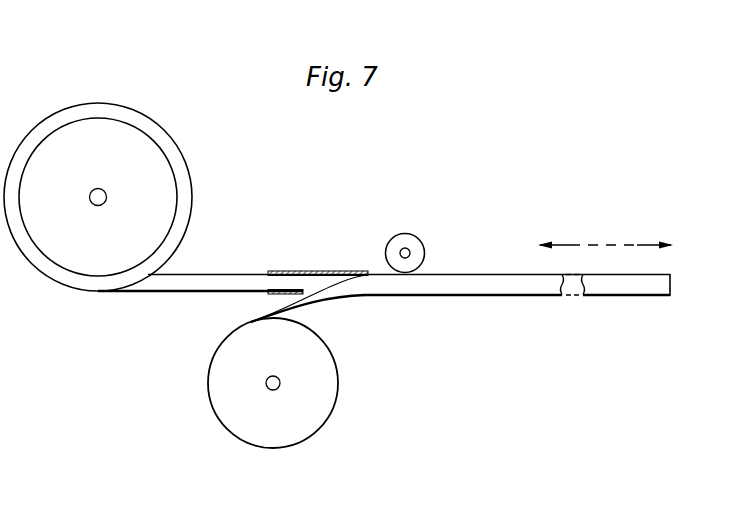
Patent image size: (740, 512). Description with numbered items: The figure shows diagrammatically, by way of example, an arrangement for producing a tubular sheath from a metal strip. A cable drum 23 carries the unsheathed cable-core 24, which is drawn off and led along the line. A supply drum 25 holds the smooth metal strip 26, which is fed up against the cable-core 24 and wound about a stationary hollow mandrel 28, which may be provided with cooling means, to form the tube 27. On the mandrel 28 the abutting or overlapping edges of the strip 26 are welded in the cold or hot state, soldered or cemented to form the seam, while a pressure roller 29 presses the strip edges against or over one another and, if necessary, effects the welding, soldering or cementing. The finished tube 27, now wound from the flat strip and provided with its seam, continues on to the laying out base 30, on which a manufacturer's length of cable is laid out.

The cable drum 23 is at (118, 143).
The unsheathed cable-core 24 is at (228, 284).
The supply drum 25 is at (301, 424).
The smooth metal strip 26 is at (310, 299).
The tube 27 is at (502, 283).
The stationary hollow mandrel 28 is at (295, 272).
The pressure roller 29 is at (407, 240).
The laying out base 30 is at (642, 245).